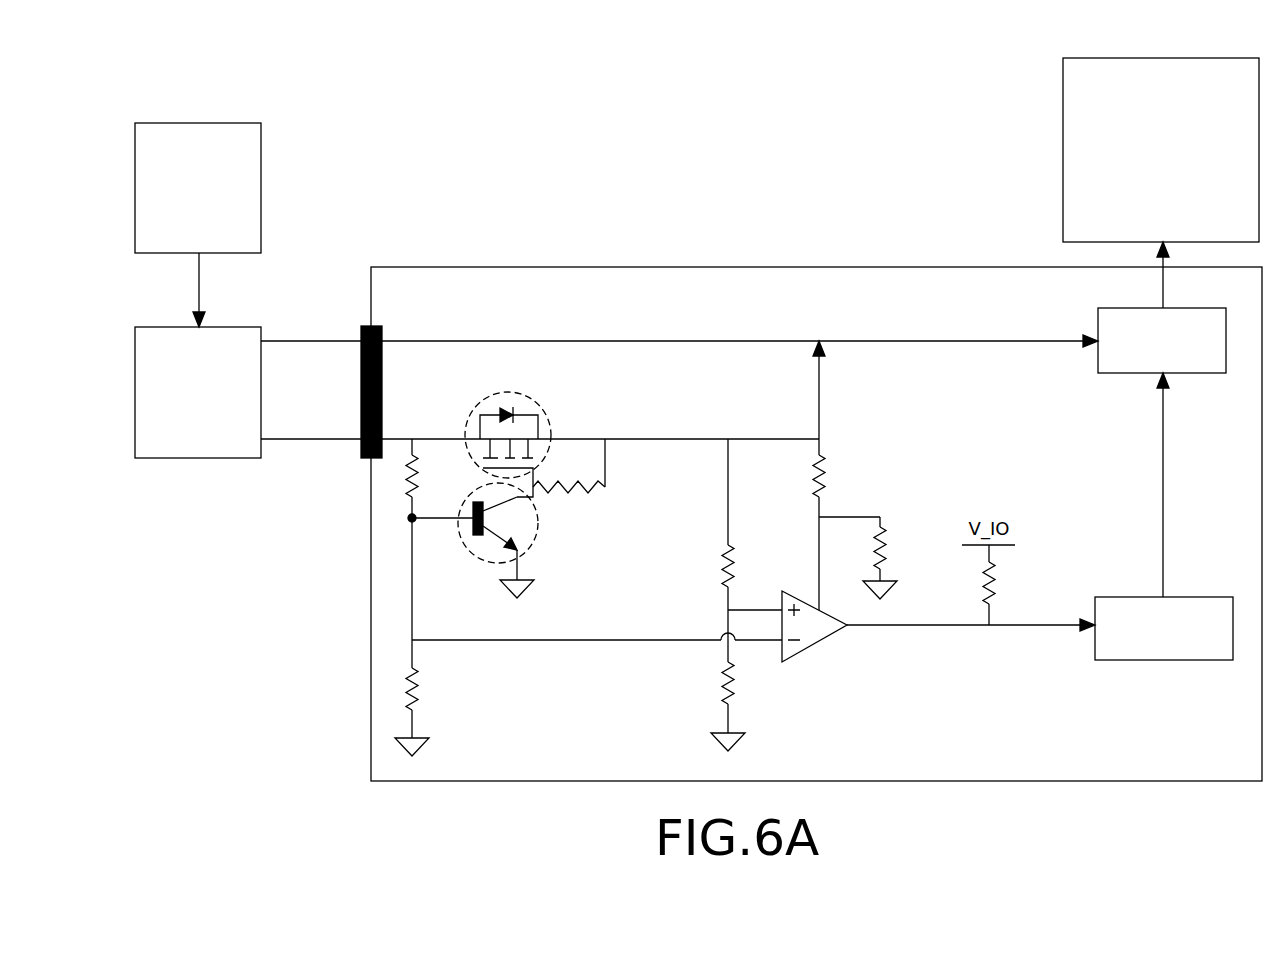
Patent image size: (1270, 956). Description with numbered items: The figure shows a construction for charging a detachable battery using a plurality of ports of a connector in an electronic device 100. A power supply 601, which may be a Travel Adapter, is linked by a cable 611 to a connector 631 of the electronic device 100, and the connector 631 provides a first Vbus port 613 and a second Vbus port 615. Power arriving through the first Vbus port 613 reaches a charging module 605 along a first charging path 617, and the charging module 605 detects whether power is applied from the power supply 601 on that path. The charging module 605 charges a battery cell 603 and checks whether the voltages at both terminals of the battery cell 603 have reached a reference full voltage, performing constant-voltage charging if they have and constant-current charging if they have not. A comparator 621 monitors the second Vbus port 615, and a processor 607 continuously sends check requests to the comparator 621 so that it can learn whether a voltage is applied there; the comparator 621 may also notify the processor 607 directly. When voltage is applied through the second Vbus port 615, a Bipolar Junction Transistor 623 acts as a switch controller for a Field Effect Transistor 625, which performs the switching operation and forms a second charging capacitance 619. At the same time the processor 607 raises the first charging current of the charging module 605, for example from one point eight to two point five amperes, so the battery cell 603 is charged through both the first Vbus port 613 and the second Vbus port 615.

The electronic device 100 is at (908, 267).
The power supply 601 is at (216, 123).
The battery cell 603 is at (1188, 58).
The charging module 605 is at (1188, 308).
The processor 607 is at (1193, 597).
The cable 611 is at (216, 327).
The first Vbus port 613 is at (284, 341).
The second Vbus port 615 is at (284, 439).
The first charging path 617 is at (562, 341).
The second charging capacitance 619 is at (819, 395).
The comparator 621 is at (818, 644).
The Bipolar Junction Transistor 623 is at (534, 543).
The Field Effect Transistor 625 is at (540, 408).
The connector 631 is at (381, 326).